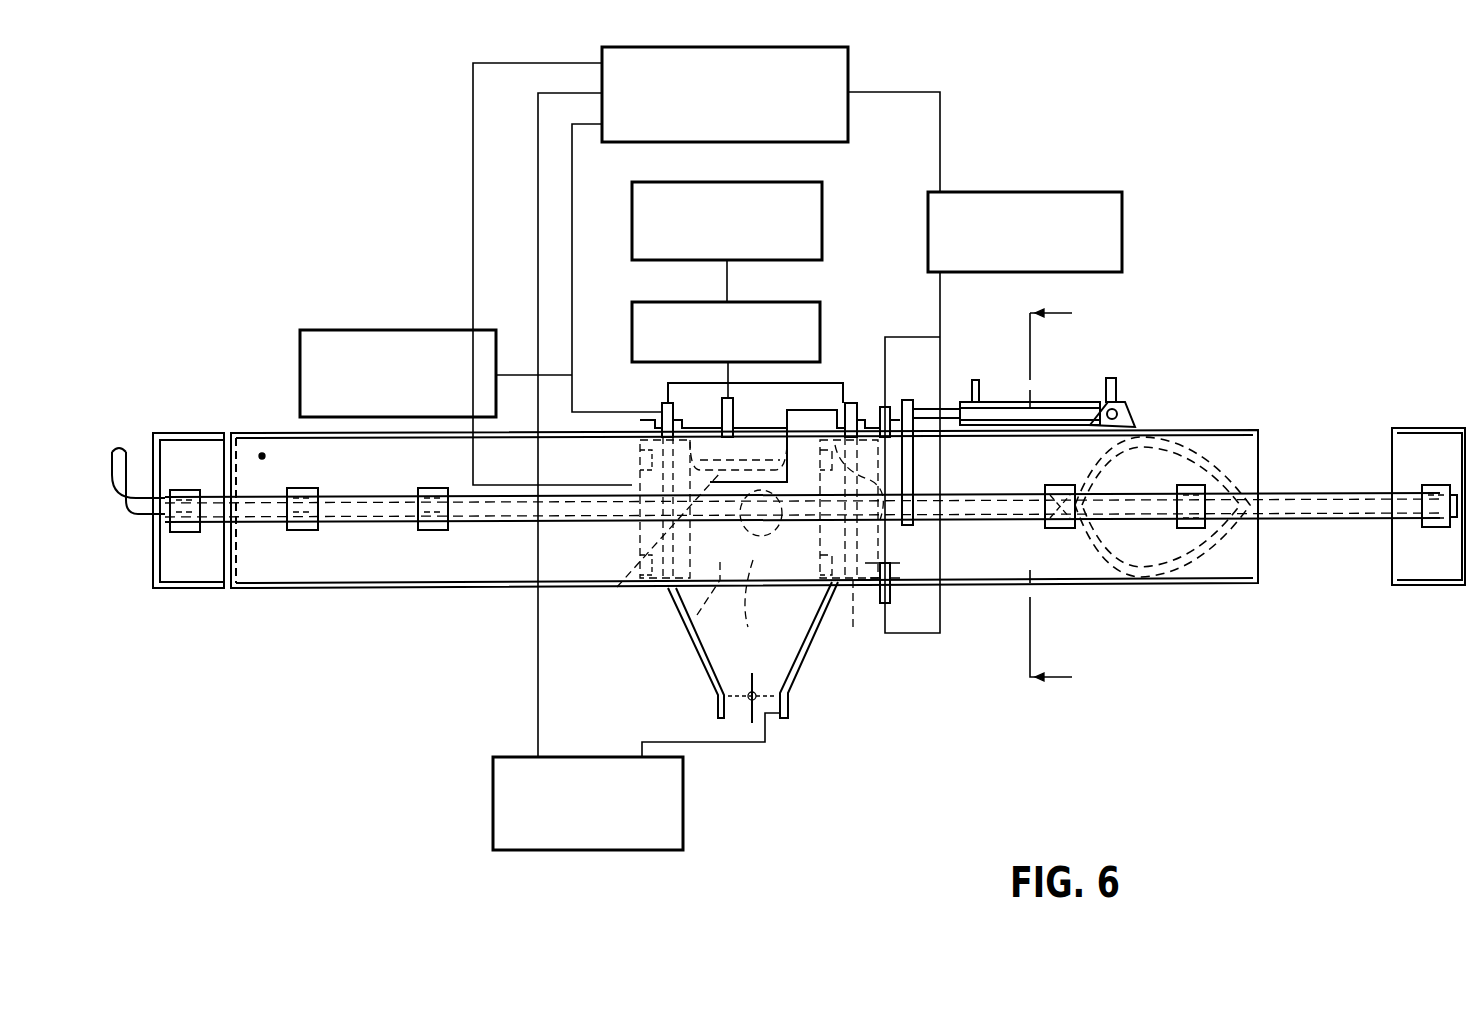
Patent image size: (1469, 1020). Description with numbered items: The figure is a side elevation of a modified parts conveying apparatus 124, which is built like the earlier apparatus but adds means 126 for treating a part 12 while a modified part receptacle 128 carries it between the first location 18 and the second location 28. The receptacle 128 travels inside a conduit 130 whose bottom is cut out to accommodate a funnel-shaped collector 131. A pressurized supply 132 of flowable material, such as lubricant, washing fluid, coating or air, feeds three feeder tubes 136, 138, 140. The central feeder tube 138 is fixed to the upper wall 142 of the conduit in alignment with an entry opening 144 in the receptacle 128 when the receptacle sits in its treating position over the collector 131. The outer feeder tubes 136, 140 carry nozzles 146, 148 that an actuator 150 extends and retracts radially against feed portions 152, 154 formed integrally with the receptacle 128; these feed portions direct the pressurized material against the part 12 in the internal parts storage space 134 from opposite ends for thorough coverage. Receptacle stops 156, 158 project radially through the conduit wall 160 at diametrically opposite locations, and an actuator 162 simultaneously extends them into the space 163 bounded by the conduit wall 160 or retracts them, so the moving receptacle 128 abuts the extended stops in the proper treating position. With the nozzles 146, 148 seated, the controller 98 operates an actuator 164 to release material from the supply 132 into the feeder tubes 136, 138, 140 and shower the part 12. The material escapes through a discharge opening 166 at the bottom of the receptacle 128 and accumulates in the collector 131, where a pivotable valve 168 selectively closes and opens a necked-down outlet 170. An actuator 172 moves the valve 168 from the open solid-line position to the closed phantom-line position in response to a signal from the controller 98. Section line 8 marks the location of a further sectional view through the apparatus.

The controller 98 is at (712, 123).
The pressurized supply 132 is at (708, 255).
The actuator 162 is at (1006, 267).
The actuator 164 is at (812, 312).
The actuator 150 is at (378, 407).
The actuator 172 is at (569, 837).
The conduit 130 is at (460, 590).
The upper wall 142 is at (280, 435).
The first location 18 is at (262, 456).
The second location 28 is at (1326, 458).
The parts conveying apparatus 124 is at (1300, 350).
The feeder tube 136 is at (655, 406).
The nozzle 146 is at (662, 398).
The feeder tube 138 is at (740, 405).
The feeder tube 140 is at (870, 395).
The nozzle 148 is at (860, 390).
The receptacle stop 156 is at (890, 432).
The receptacle stop 158 is at (890, 572).
The feed portion 152 is at (632, 460).
The entry opening 144 is at (630, 550).
The part 12 is at (775, 553).
The parts storage space 134 is at (640, 583).
The part receptacle 128 is at (697, 615).
The discharge opening 166 is at (763, 609).
The feed portion 154 is at (863, 619).
The funnel-shaped collector 131 is at (817, 640).
The pivotable valve 168 is at (752, 676).
The necked-down outlet 170 is at (773, 712).
The conduit wall 160 is at (1097, 587).
The space 163 is at (1063, 560).
The section line 8 is at (1061, 496).
The means for treating a part 126 is at (500, 681).